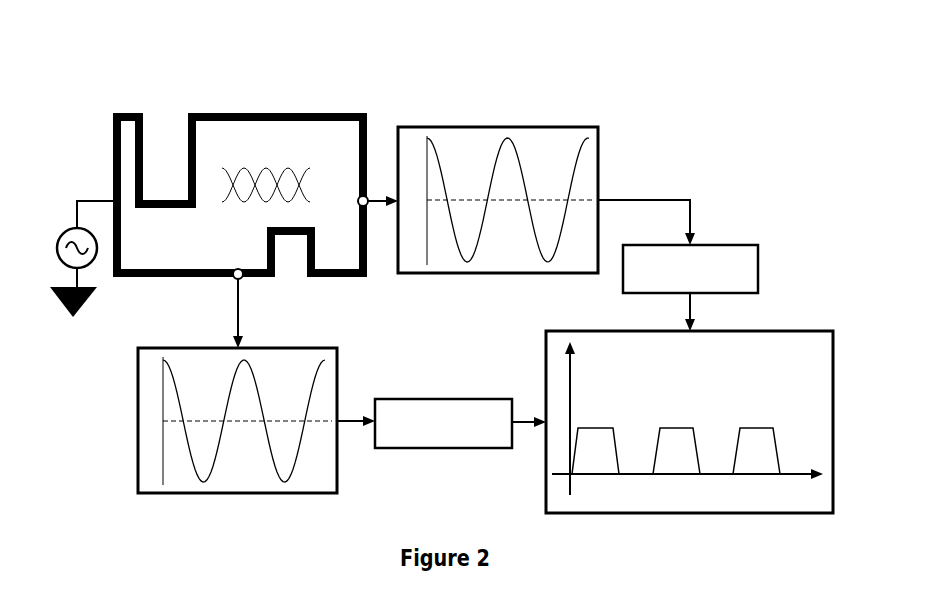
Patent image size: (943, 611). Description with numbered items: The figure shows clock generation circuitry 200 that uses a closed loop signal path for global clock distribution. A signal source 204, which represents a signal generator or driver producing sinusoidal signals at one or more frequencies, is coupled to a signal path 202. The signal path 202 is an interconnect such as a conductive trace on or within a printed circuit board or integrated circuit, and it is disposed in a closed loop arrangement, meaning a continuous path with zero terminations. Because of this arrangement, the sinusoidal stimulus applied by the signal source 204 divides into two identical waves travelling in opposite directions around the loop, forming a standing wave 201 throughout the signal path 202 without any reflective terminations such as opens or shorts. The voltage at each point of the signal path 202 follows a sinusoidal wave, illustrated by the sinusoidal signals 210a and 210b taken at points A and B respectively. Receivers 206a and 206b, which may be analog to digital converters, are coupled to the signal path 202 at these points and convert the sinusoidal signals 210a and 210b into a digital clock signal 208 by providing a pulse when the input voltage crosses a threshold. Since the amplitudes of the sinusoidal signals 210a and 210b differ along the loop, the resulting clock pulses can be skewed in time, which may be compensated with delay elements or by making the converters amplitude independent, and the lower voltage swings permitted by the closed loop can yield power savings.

The clock generation circuitry 200 is at (676, 83).
The standing wave 201 is at (290, 168).
The signal path 202 is at (264, 113).
The signal source 204 is at (57, 262).
The receiver 206a is at (759, 276).
The receiver 206b is at (475, 398).
The digital clock signal 208 is at (545, 481).
The sinusoidal signal 210a is at (600, 152).
The sinusoidal signal 210b is at (338, 354).